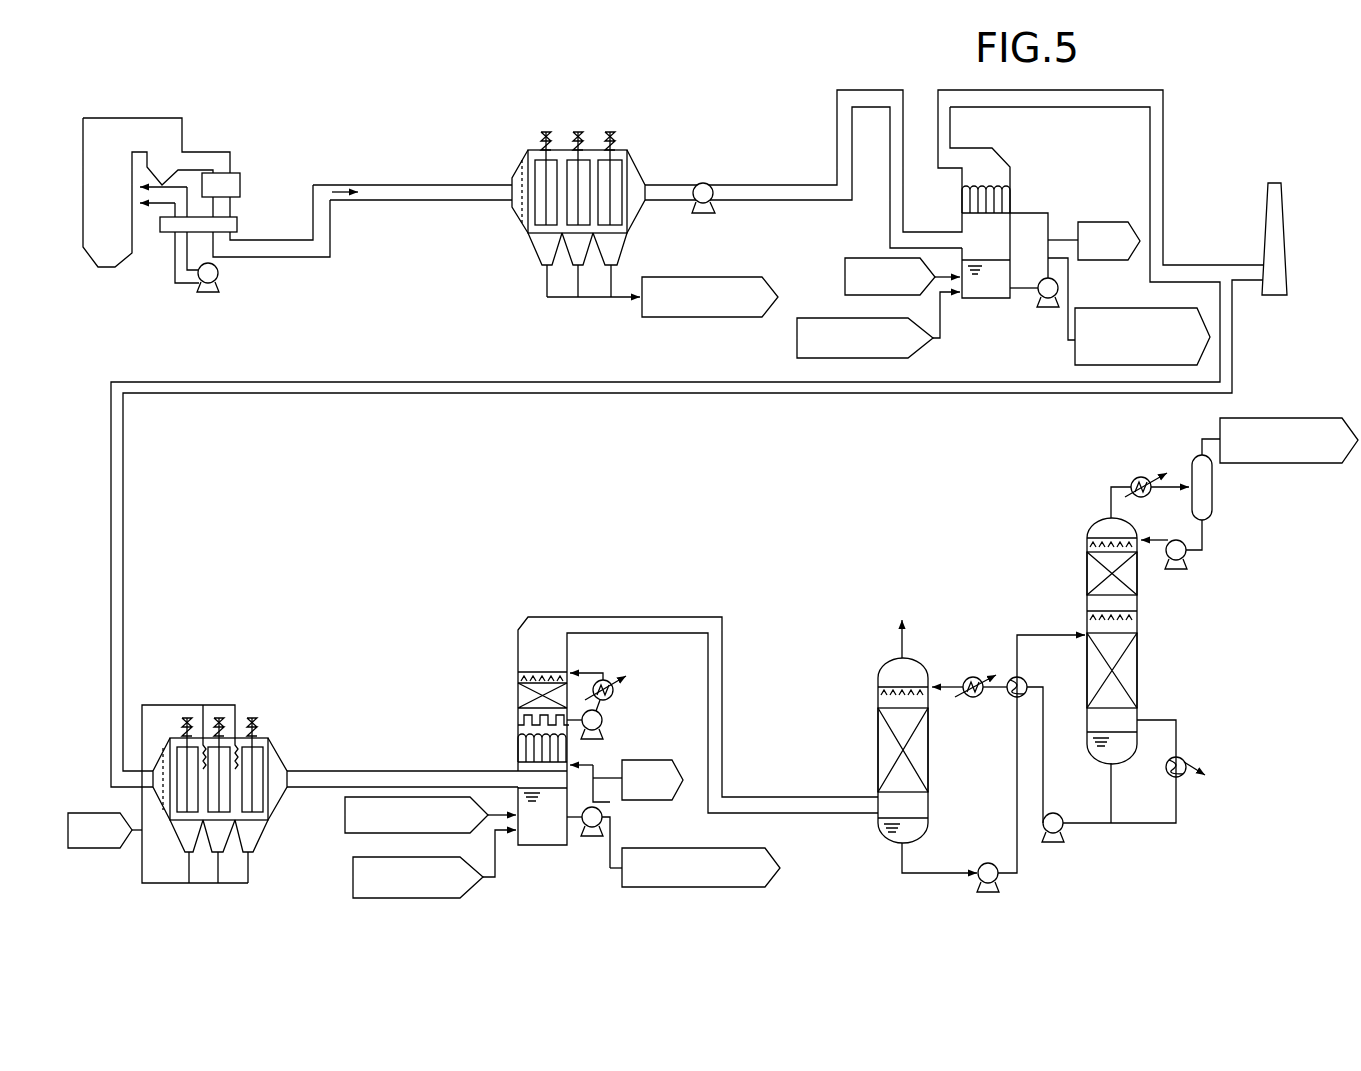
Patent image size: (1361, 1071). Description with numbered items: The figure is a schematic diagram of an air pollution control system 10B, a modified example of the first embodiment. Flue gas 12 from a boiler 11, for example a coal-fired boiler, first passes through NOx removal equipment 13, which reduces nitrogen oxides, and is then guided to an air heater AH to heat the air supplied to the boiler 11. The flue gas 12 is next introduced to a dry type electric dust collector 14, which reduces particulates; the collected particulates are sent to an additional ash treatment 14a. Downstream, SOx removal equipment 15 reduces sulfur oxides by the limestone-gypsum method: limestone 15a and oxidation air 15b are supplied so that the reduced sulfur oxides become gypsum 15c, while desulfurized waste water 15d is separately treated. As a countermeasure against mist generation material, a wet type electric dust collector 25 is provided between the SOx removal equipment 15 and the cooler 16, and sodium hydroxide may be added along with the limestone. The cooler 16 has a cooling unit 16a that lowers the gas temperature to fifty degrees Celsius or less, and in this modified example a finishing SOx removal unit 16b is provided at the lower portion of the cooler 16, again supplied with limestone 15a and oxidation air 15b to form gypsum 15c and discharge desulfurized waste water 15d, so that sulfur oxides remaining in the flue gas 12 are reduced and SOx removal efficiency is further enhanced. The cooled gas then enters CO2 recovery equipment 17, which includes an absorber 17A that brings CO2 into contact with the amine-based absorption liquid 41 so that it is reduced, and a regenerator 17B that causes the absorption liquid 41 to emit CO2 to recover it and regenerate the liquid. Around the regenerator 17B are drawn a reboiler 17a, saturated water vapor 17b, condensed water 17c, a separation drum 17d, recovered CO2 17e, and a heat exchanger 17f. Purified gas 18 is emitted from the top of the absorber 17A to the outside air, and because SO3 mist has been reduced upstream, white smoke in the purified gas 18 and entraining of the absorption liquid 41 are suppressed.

The air pollution control system 10B is at (760, 81).
The boiler 11 is at (97, 108).
The flue gas 12 is at (342, 185).
The NOx removal equipment 13 is at (240, 173).
The air heater AH is at (237, 232).
The dry type electric dust collector 14 is at (557, 110).
The ash treatment 14a is at (693, 277).
The SOx removal equipment 15 is at (1010, 158).
The limestone 15a is at (845, 277).
The oxidation air 15b is at (797, 338).
The gypsum 15c is at (1092, 222).
The desulfurized waste water 15d is at (1105, 308).
The cooler 16 is at (541, 605).
The cooling unit 16a is at (518, 697).
The finishing SOx removal unit 16b is at (518, 751).
The CO2 recovery equipment 17 is at (947, 522).
The absorber 17A is at (933, 641).
The regenerator 17B is at (1069, 575).
The reboiler 17a is at (1178, 755).
The saturated water vapor 17b is at (1189, 762).
The condensed water 17c is at (1186, 782).
The separation drum 17d is at (1215, 488).
The recovered CO2 17e is at (1255, 418).
The heat exchanger 17f is at (1027, 680).
The purified gas 18 is at (902, 640).
The wet type electric dust collector 25 is at (196, 690).
The absorption liquid 41 is at (940, 666).